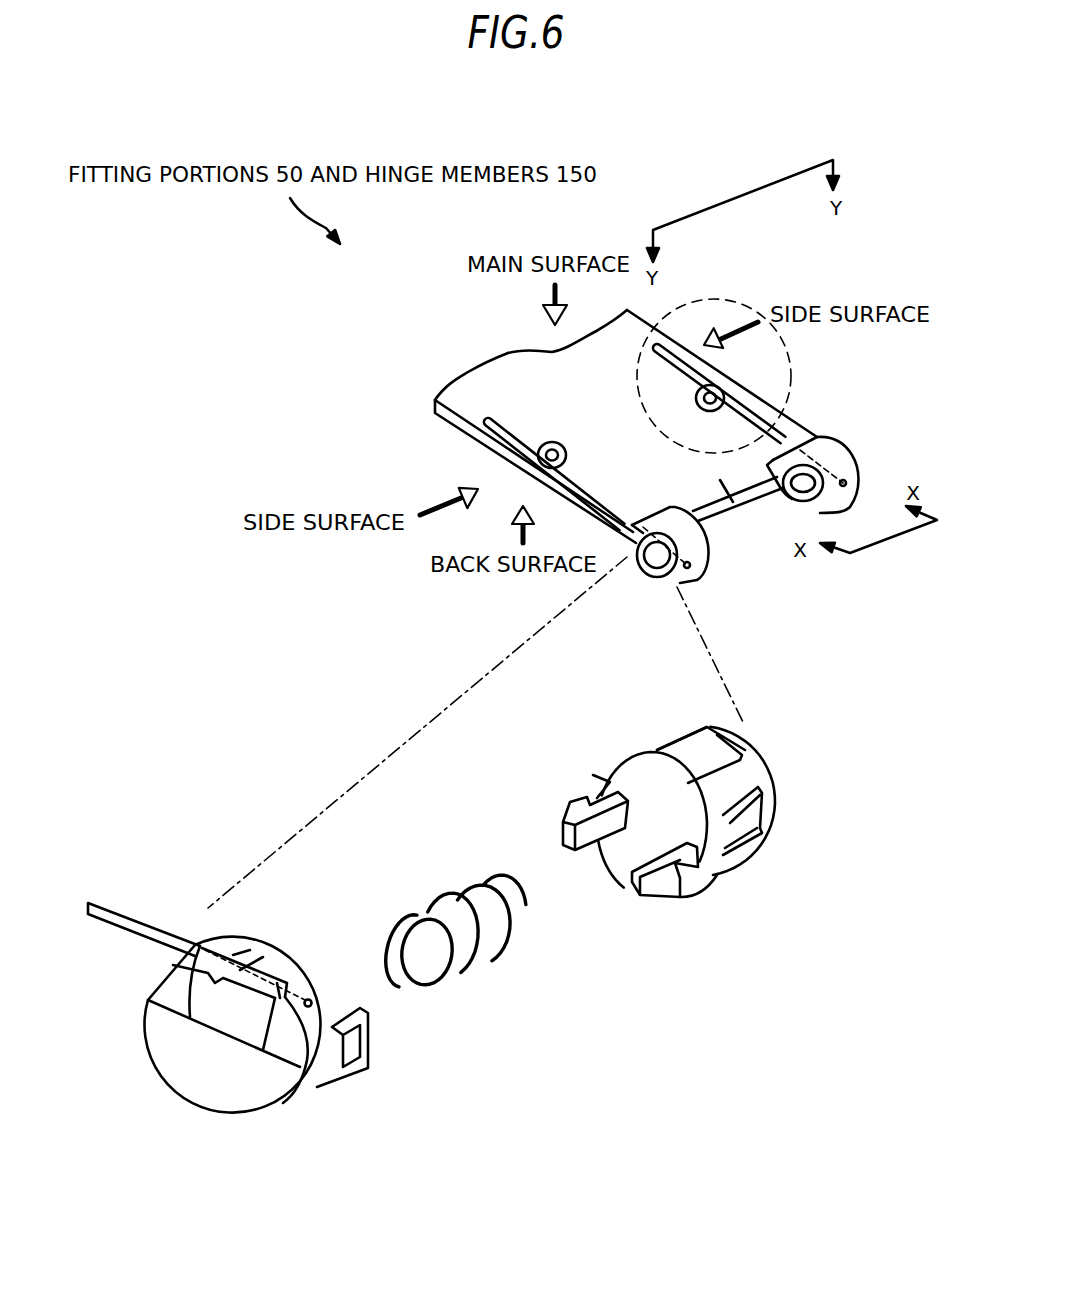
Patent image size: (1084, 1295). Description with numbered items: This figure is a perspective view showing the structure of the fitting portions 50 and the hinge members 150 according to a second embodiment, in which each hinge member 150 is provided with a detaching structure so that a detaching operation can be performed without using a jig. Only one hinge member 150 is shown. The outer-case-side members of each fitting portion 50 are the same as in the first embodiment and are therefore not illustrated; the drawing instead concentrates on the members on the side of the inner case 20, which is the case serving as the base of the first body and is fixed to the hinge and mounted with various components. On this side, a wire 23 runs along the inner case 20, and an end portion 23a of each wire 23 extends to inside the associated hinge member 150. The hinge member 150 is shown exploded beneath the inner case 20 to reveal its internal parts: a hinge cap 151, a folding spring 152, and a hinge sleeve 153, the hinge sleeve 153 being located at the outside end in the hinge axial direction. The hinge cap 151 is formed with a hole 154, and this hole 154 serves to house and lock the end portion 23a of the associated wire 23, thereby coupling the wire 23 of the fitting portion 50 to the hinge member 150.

The inner case 20 is at (513, 397).
The wire 23 is at (596, 496).
The end portion 23a is at (718, 512).
The fitting portion 50 is at (797, 352).
The hinge member 150 is at (700, 567).
The hinge cap 151 is at (300, 1100).
The folding spring 152 is at (487, 973).
The hinge sleeve 153 is at (748, 870).
The hole 154 is at (223, 985).